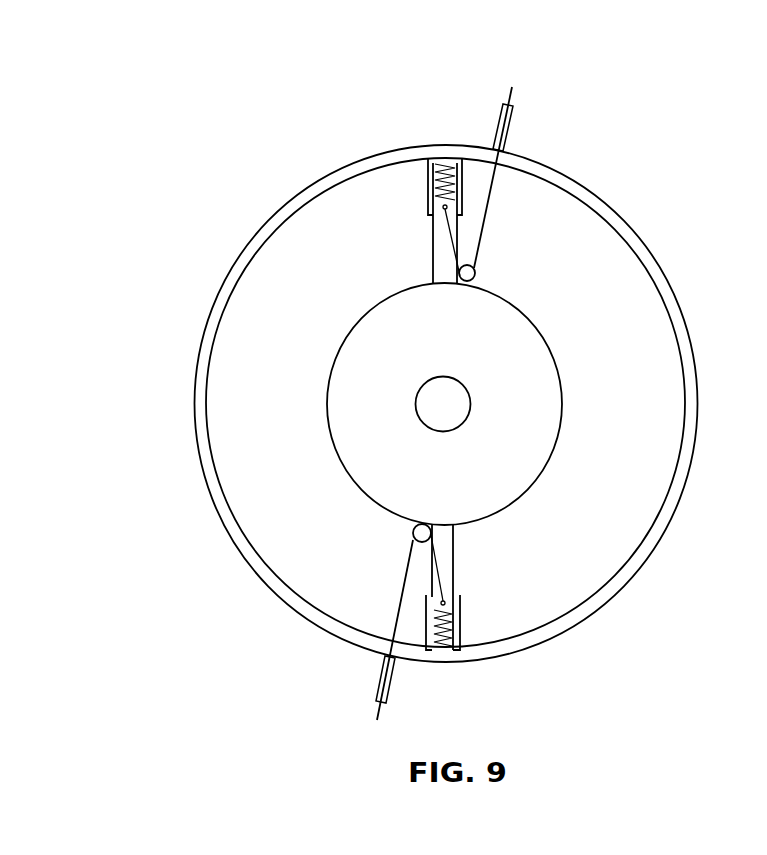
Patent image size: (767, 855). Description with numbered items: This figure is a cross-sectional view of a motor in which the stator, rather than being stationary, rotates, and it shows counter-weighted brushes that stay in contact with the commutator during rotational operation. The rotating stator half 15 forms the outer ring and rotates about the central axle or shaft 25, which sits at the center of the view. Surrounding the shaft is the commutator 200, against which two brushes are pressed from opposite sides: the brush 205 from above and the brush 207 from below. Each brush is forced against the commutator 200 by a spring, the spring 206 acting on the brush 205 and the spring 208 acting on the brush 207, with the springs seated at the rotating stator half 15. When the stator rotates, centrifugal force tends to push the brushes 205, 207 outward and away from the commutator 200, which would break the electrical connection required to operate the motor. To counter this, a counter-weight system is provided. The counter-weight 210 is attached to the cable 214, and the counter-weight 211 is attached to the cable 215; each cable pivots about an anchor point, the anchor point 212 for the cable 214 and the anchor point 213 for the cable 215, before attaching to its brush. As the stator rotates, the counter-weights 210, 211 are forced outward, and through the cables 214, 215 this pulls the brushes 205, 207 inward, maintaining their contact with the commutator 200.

The rotating stator half 15 is at (657, 546).
The commutator 200 is at (563, 433).
The central axle or shaft 25 is at (443, 416).
The spring 206 is at (445, 165).
The brush 205 is at (436, 258).
The anchor point 212 is at (470, 270).
The cable 214 is at (493, 188).
The counter-weight 210 is at (508, 130).
The spring 208 is at (443, 648).
The brush 207 is at (457, 556).
The anchor point 213 is at (413, 538).
The cable 215 is at (398, 601).
The counter-weight 211 is at (380, 686).